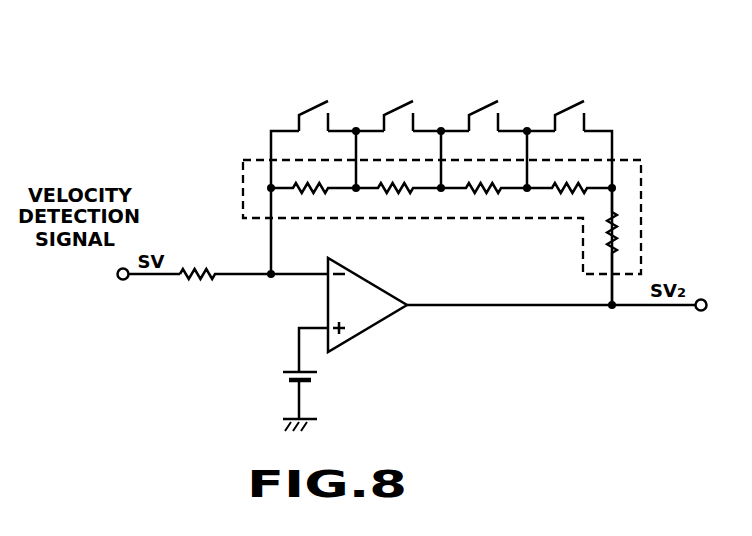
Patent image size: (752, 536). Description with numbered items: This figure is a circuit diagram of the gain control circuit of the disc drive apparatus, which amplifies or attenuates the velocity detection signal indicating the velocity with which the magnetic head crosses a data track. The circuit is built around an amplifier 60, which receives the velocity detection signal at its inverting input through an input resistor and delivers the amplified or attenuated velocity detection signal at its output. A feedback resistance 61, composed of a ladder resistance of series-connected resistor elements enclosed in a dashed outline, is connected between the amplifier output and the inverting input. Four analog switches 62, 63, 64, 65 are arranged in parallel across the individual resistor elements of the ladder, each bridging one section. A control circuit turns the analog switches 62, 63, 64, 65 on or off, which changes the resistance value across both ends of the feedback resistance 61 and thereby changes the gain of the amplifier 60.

The amplifier 60 is at (365, 291).
The feedback resistance 61 is at (628, 158).
The analog switch 62 is at (320, 102).
The analog switch 63 is at (405, 102).
The analog switch 64 is at (490, 102).
The analog switch 65 is at (577, 102).